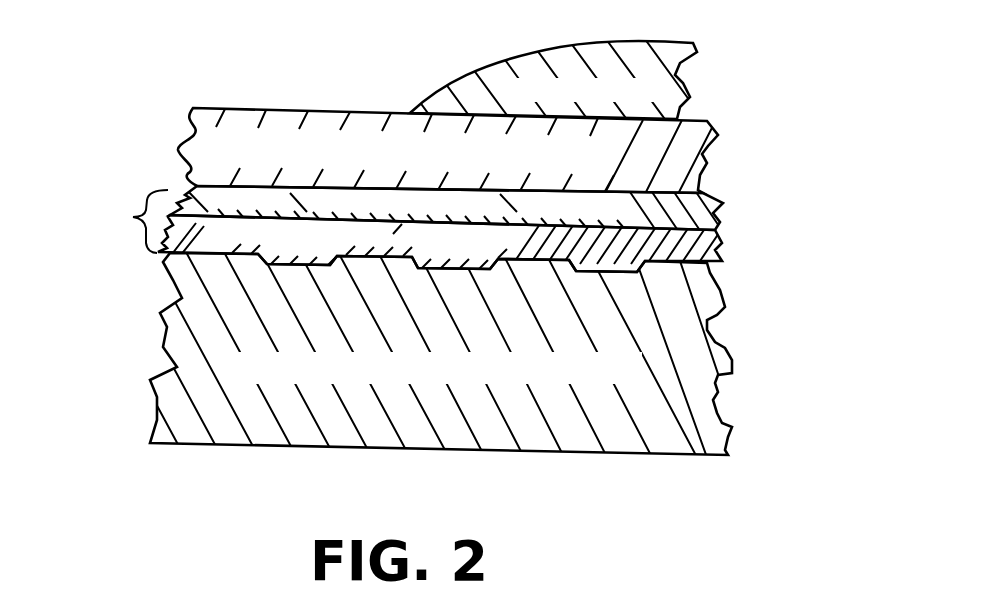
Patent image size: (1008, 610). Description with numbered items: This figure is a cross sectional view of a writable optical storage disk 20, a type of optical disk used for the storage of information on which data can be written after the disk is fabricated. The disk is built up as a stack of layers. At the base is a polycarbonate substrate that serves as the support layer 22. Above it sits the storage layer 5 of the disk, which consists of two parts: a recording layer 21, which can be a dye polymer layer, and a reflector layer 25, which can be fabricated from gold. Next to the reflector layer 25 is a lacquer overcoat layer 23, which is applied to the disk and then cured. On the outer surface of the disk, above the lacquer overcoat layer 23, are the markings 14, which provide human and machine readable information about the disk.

The storage layer 5 is at (133, 217).
The markings 14 is at (693, 64).
The writable optical storage disk 20 is at (125, 371).
The recording layer 21 is at (717, 250).
The polycarbonate substrate or support layer 22 is at (727, 349).
The lacquer overcoat layer 23 is at (703, 163).
The reflector layer 25 is at (717, 212).